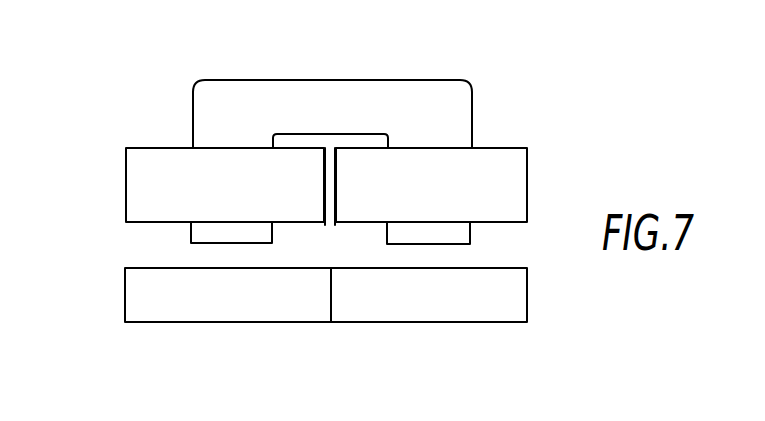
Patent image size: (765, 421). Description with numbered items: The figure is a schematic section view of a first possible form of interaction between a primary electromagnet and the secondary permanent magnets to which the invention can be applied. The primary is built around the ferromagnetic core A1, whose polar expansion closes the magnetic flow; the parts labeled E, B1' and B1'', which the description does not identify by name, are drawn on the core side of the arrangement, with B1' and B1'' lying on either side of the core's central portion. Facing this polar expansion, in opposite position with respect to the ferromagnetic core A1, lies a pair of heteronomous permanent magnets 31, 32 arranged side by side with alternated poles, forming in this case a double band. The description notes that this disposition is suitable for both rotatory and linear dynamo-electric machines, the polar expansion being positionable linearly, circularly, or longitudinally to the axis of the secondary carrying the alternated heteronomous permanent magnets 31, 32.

The ferromagnetic core A1 is at (443, 80).
The armature element E is at (170, 103).
The first coil body half B1' is at (180, 195).
The second coil body half B1'' is at (487, 182).
The heteronomous permanent magnet 31 is at (160, 313).
The heteronomous permanent magnet 32 is at (493, 298).